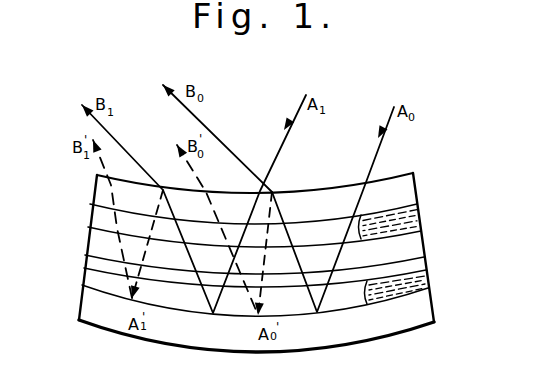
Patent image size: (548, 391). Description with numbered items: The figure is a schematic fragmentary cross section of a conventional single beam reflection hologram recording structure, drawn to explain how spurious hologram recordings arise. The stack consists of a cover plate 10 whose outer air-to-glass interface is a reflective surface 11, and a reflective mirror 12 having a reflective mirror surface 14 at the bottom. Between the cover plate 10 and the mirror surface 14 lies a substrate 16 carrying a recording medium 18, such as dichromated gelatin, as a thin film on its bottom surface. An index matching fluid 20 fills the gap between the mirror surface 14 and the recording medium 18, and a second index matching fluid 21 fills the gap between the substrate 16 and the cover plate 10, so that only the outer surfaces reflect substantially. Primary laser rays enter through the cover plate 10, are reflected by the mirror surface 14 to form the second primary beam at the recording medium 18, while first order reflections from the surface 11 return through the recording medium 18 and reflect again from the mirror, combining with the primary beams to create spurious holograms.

The cover plate 10 is at (258, 251).
The surface 11 is at (311, 190).
The reflective mirror 12 is at (434, 322).
The reflective mirror surface 14 is at (427, 278).
The substrate 16 is at (421, 227).
The recording medium 18 is at (424, 257).
The index matching fluid 20 is at (83, 277).
The index matching fluid 21 is at (90, 212).